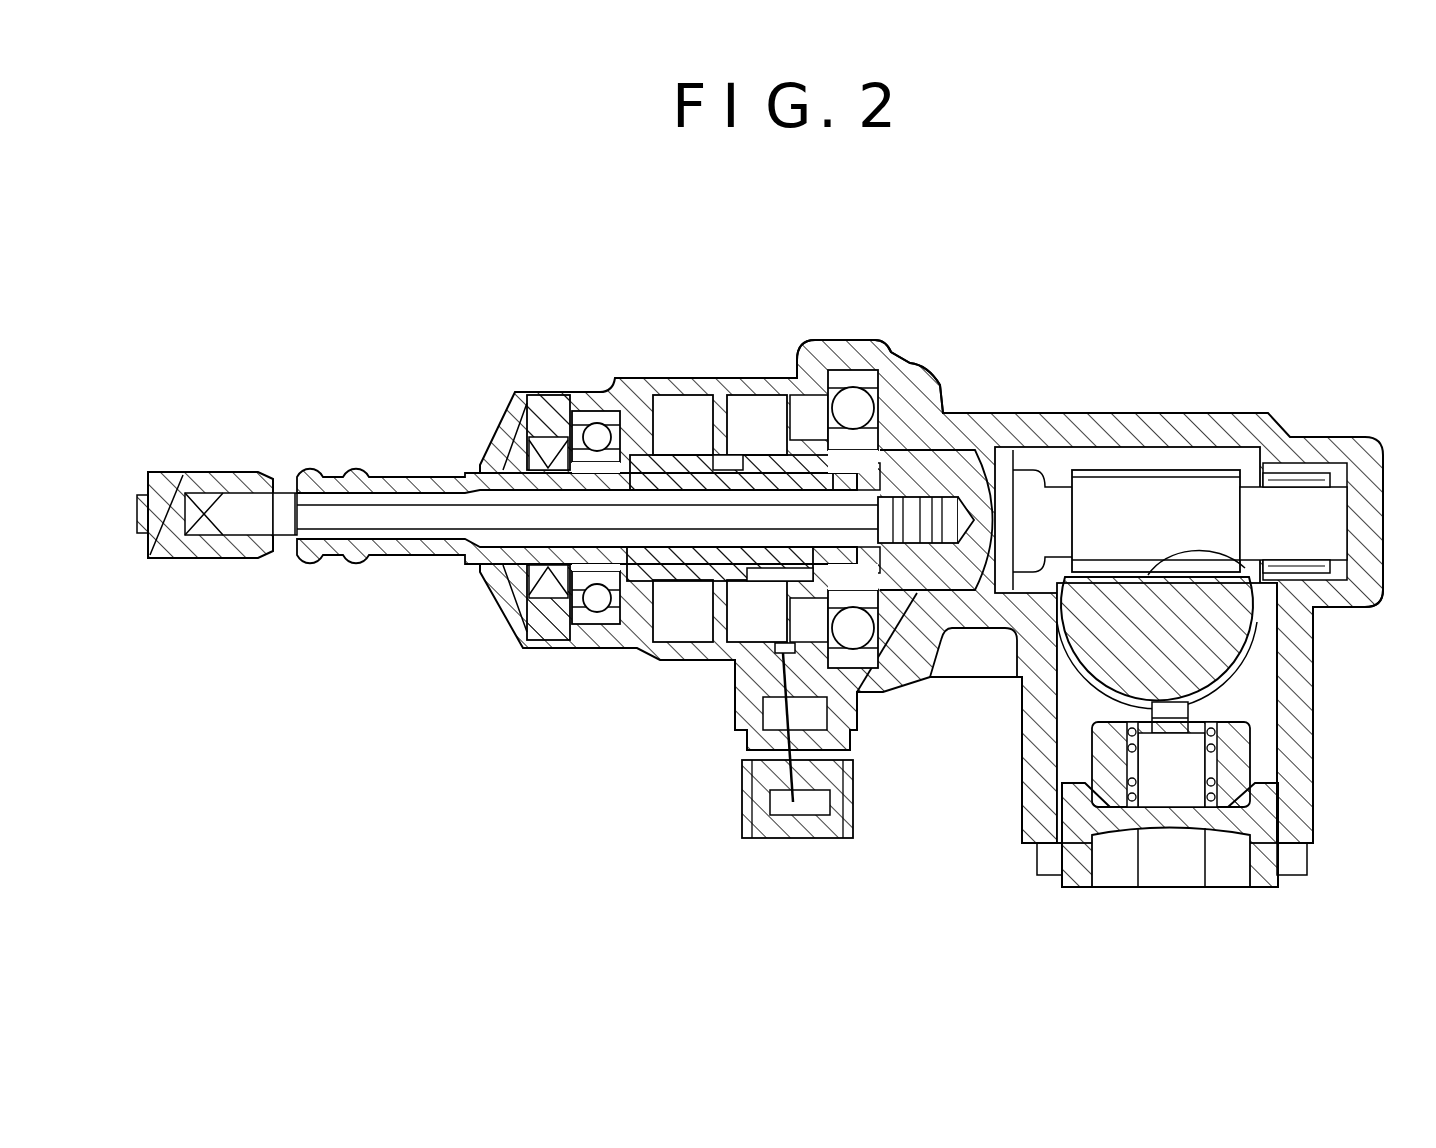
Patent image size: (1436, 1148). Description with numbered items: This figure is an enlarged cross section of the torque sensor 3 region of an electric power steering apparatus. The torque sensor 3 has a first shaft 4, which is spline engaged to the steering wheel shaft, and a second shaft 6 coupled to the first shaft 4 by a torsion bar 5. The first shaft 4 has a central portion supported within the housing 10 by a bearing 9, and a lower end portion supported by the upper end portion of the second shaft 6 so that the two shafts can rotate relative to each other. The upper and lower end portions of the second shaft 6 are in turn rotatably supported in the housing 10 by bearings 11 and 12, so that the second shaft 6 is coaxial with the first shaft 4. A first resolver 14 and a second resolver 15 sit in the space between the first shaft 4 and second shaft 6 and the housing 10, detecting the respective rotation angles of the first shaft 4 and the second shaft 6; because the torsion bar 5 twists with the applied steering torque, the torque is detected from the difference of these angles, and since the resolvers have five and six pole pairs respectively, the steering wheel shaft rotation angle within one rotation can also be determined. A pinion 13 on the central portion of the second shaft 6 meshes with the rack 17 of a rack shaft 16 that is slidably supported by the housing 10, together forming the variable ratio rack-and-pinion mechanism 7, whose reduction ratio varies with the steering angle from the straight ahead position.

The torque sensor 3 is at (665, 663).
The first shaft 4 is at (205, 470).
The torsion bar 5 is at (323, 507).
The second shaft 6 is at (993, 455).
The variable ratio rack-and-pinion mechanism 7 is at (1240, 677).
The bearing 9 is at (596, 425).
The housing 10 is at (928, 372).
The bearing 11 is at (852, 398).
The bearing 12 is at (1292, 473).
The pinion 13 is at (1157, 477).
The first resolver 14 is at (630, 663).
The second resolver 15 is at (747, 628).
The rack shaft 16 is at (1097, 677).
The rack 17 is at (1290, 620).